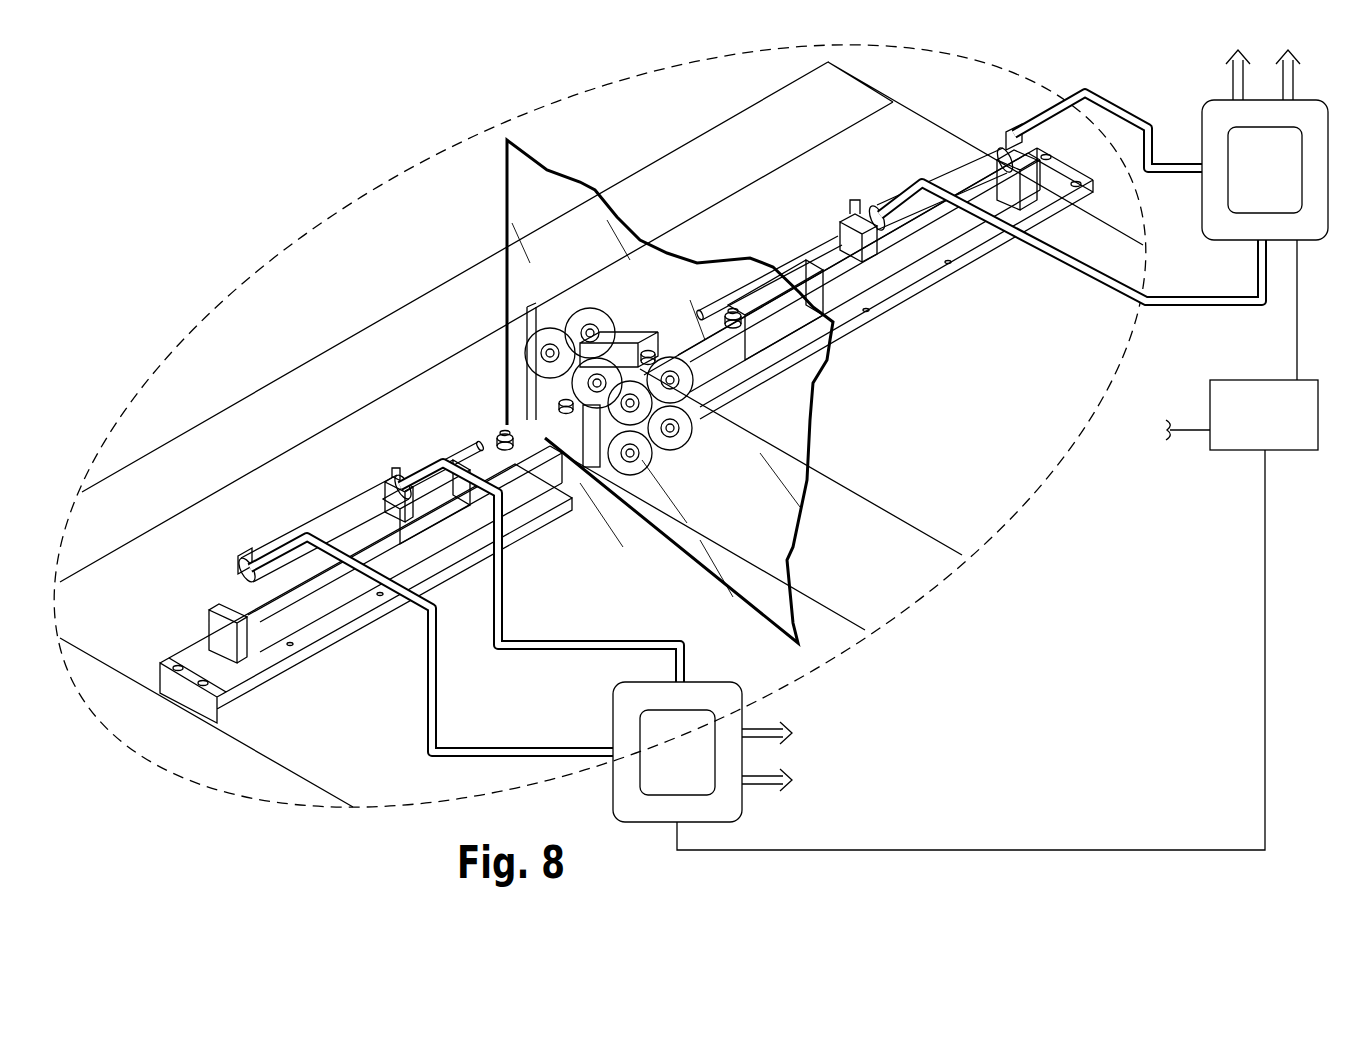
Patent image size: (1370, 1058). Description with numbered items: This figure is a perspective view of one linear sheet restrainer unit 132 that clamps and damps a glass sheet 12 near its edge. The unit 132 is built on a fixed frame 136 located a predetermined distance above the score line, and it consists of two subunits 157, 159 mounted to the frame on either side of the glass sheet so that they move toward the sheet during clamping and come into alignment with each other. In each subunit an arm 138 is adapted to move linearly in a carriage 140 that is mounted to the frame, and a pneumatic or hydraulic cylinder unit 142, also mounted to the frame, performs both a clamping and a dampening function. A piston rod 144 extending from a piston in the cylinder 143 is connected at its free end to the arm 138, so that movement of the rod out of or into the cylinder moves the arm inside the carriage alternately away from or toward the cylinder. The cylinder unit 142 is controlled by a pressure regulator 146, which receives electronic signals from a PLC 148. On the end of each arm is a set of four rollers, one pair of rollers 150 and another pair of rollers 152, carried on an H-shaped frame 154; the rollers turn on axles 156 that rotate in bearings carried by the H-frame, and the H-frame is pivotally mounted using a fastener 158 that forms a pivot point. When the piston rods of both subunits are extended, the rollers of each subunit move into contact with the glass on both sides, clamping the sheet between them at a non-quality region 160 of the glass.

The panel 12 is at (760, 588).
The linear sheet restrainer unit 132 is at (379, 277).
The fixed frame 136 is at (957, 240).
The arm 138 is at (885, 231).
The carriage 140 is at (781, 330).
The pneumatic or hydraulic cylinder unit 142 is at (626, 431).
The cylinder 143 is at (885, 232).
The piston rod 144 is at (826, 262).
The pressure regulator 146 is at (1318, 205).
The PLC 148 is at (1288, 428).
The pair of rollers 150 is at (634, 393).
The pair of rollers 152 is at (638, 338).
The H-shaped frame 154 is at (640, 340).
The axle 156 is at (527, 352).
The subunit 157 is at (310, 497).
The fastener 158 is at (652, 350).
The subunit 159 is at (820, 176).
The non-quality region 160 is at (527, 217).